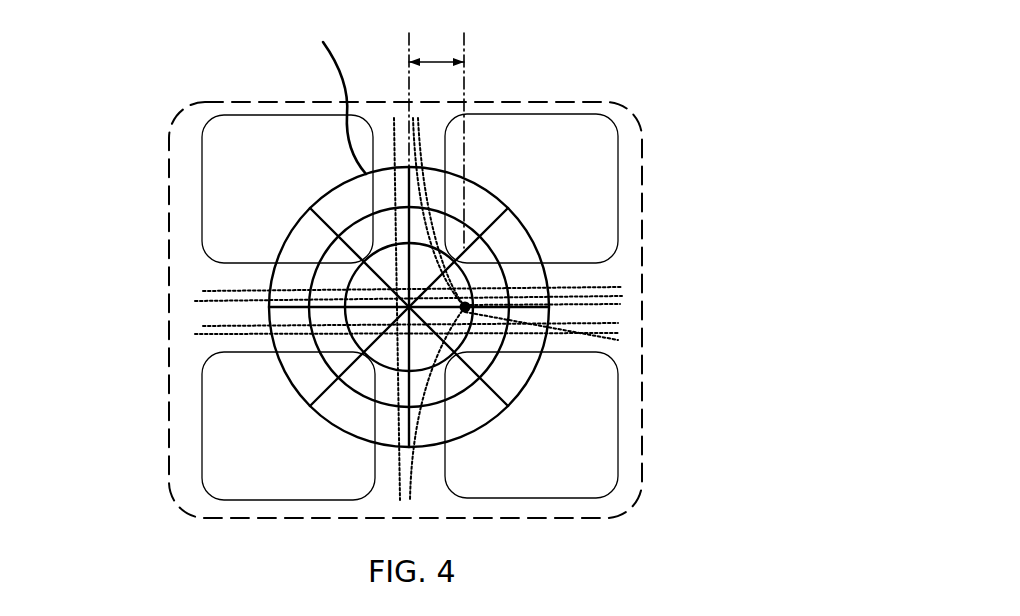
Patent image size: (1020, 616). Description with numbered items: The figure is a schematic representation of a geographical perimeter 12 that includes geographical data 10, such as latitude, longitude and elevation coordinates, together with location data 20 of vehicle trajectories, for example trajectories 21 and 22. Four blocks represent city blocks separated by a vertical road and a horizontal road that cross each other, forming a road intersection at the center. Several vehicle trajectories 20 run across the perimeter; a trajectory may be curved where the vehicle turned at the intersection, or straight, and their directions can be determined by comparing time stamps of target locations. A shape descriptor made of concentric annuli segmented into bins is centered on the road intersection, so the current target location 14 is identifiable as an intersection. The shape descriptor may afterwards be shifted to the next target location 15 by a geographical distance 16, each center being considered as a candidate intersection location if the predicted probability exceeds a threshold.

The geographical data 10 is at (183, 150).
The geographical perimeter 12 is at (240, 100).
The target location 14 is at (409, 307).
The target location 15 is at (465, 308).
The geographical distance 16 is at (432, 60).
The location data of vehicle trajectories 20 is at (102, 225).
The trajectory 21 is at (212, 291).
The trajectory 22 is at (212, 302).